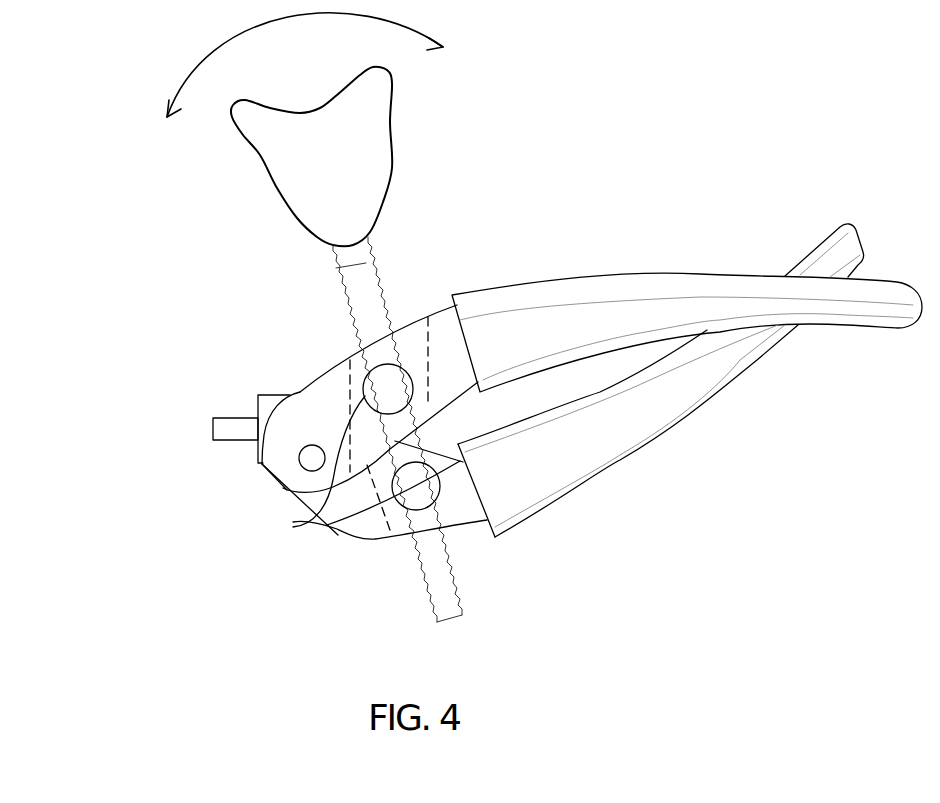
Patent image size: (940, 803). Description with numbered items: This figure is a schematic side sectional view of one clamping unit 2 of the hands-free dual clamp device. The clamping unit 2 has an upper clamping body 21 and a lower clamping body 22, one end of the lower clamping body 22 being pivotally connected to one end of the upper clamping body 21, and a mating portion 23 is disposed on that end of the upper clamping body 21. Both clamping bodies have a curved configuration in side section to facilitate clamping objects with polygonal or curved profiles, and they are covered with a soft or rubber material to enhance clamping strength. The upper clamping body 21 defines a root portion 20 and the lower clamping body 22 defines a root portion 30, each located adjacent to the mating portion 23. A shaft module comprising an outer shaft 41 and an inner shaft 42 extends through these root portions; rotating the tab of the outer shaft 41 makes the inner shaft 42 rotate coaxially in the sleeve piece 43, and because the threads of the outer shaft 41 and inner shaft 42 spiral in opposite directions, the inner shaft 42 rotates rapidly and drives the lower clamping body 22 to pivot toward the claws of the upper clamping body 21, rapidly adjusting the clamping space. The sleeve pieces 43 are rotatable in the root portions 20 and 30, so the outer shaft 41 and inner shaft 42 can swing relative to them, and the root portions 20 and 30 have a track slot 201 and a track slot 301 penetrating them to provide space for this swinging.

The clamping unit 2 is at (770, 482).
The root portion 20 is at (337, 406).
The track slot 201 is at (336, 365).
The upper clamping body 21 is at (612, 292).
The lower clamping body 22 is at (692, 375).
The mating portion 23 is at (238, 423).
The root portion 30 is at (432, 455).
The track slot 301 is at (453, 460).
The outer shaft 41 is at (374, 254).
The inner shaft 42 is at (378, 293).
The sleeve piece 43 is at (293, 527).